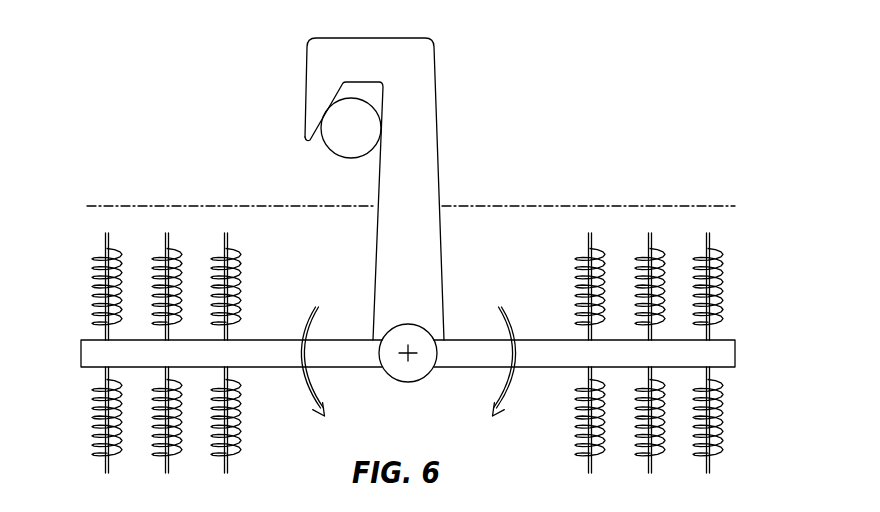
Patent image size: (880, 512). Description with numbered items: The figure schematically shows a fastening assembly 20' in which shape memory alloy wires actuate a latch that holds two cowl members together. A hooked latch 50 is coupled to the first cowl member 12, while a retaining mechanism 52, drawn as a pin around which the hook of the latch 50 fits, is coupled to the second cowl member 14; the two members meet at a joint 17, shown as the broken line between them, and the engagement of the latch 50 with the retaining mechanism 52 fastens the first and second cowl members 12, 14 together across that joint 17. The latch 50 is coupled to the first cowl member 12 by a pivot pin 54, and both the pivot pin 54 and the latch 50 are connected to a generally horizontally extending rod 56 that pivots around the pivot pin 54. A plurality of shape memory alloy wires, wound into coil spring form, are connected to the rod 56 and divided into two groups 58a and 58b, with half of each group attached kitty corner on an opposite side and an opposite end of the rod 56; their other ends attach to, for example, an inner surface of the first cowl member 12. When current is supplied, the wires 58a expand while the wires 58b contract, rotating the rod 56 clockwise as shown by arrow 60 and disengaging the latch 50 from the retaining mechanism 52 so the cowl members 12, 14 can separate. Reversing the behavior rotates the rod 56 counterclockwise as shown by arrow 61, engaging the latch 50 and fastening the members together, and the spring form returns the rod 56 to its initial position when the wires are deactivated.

The first cowl member 12 is at (508, 239).
The second cowl member 14 is at (508, 195).
The joint 17 is at (575, 205).
The fastening assembly 20' is at (159, 89).
The latch 50 is at (418, 84).
The retaining mechanism 52 is at (337, 158).
The pivot pin 54 is at (412, 357).
The rod 56 is at (720, 352).
The first group of shape memory alloy wires 58a is at (737, 267).
The second group of shape memory alloy wires 58b is at (78, 267).
The arrow indicating clockwise rotation 60 is at (513, 383).
The arrow indicating counterclockwise rotation 61 is at (305, 325).